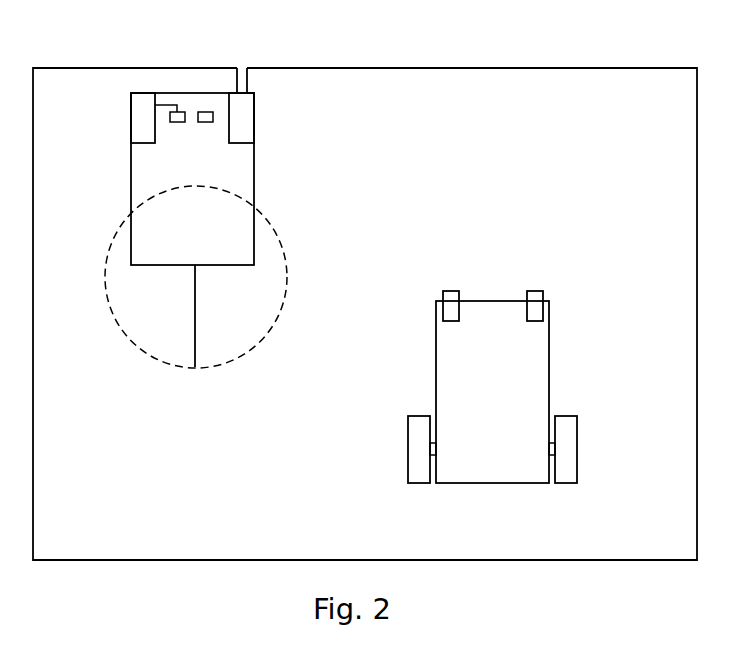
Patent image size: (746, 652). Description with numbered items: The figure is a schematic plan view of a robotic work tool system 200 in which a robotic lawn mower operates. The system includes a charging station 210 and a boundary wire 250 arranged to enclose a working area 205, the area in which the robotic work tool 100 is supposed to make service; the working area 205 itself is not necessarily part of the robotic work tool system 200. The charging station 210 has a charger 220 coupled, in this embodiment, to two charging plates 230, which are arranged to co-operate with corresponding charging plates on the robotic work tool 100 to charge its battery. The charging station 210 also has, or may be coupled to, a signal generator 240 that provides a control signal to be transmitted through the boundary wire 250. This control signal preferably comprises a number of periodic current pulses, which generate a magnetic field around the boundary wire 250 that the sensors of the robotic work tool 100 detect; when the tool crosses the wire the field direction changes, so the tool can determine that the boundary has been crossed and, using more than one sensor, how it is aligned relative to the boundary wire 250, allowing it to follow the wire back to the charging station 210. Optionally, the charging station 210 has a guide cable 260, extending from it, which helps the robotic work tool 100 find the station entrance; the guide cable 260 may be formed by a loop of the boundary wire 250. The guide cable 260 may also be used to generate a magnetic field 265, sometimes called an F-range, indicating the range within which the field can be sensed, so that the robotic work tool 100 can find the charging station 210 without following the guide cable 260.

The robotic work tool 100 is at (549, 375).
The robotic work tool system 200 is at (188, 141).
The working area 205 is at (516, 84).
The charging station 210 is at (131, 148).
The charger 220 is at (143, 102).
The charging plates 230 is at (178, 111).
The signal generator 240 is at (254, 128).
The boundary wire 250 is at (643, 68).
The guide cable 260 is at (197, 347).
The magnetic field (F-range) 265 is at (108, 298).